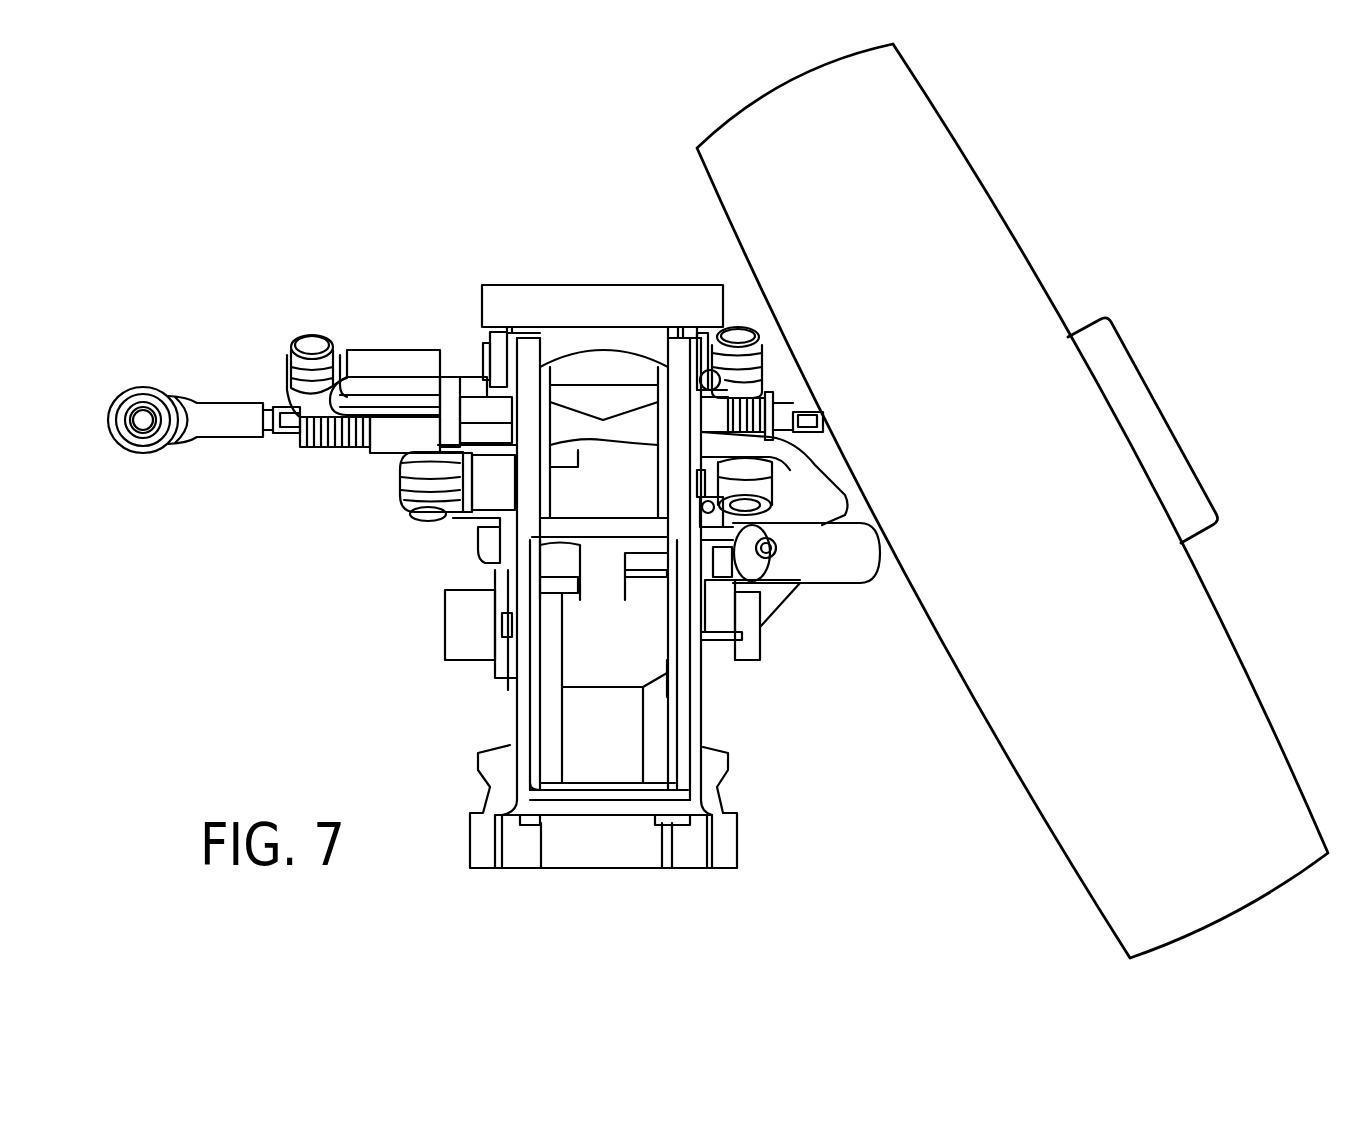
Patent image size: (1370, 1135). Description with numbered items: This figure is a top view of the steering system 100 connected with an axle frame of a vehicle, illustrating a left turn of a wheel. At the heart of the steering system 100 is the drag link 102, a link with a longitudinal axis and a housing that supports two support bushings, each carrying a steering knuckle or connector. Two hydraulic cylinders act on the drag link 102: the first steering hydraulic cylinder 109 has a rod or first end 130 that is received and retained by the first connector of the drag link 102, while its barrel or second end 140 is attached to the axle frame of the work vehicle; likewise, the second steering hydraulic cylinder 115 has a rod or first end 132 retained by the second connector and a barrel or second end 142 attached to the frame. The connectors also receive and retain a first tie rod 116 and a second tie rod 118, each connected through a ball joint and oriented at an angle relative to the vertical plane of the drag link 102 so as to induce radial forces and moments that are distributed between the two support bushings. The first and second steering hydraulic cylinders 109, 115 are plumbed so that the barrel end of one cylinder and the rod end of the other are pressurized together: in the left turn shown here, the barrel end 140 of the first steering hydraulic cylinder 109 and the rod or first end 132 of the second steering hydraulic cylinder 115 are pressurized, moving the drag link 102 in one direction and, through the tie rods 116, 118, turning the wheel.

The steering system 100 is at (391, 233).
The drag link 102 is at (456, 405).
The first steering hydraulic cylinder 109 is at (455, 517).
The second steering hydraulic cylinder 115 is at (503, 332).
The first tie rod 116 is at (817, 418).
The second tie rod 118 is at (217, 430).
The rod or first end of first steering hydraulic cylinder 130 is at (750, 503).
The rod or first end of second steering hydraulic cylinder 132 is at (312, 340).
The barrel or second end of first steering hydraulic cylinder 140 is at (412, 487).
The barrel or second end of second steering hydraulic cylinder 142 is at (742, 336).